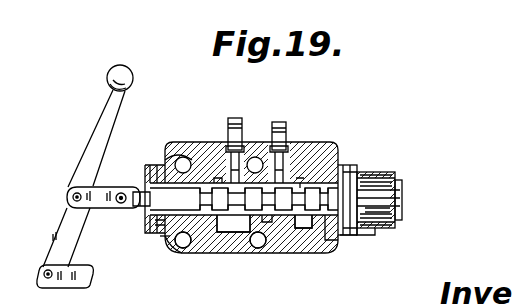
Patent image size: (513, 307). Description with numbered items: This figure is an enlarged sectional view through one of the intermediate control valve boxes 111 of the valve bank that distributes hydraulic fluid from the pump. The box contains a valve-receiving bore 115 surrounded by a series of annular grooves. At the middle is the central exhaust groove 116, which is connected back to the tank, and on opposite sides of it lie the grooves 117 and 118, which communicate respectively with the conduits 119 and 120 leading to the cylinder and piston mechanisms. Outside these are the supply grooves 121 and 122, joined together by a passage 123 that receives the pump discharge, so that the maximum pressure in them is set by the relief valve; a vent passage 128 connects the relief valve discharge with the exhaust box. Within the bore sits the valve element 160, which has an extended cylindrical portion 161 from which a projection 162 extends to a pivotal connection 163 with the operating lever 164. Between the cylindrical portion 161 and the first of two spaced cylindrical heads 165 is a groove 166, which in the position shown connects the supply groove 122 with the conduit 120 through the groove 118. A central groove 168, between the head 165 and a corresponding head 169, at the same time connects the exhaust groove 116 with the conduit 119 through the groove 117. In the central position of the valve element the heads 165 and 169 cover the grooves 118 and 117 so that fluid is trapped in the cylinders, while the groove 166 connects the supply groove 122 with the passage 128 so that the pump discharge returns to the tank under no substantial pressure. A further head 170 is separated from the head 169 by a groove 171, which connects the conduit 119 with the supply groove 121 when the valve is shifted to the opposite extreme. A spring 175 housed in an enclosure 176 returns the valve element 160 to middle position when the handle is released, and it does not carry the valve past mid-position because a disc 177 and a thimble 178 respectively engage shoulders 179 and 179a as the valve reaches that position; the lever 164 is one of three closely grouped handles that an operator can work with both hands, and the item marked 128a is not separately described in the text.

The control valve box 111 is at (340, 150).
The valve-receiving bore 115 is at (310, 181).
The central exhaust groove 116 is at (230, 224).
The annular groove 117 is at (264, 222).
The annular groove 118 is at (193, 252).
The conduit 119 is at (286, 123).
The conduit 120 is at (238, 120).
The annular supply groove 121 is at (300, 183).
The annular supply groove 122 is at (176, 190).
The passage 123 is at (298, 225).
The passage 128 is at (158, 226).
The pin 128a is at (168, 238).
The valve element 160 is at (378, 180).
The extended cylindrical portion 161 is at (160, 162).
The projection 162 is at (148, 188).
The pivotal connection 163 is at (121, 203).
The operating lever 164 is at (98, 152).
The cylindrical head 165 is at (175, 238).
The groove 166 is at (218, 187).
The central groove 168 is at (258, 230).
The cylindrical head 169 is at (312, 222).
The head 170 is at (372, 223).
The groove 171 is at (340, 176).
The spring 175 is at (383, 212).
The enclosure 176 is at (366, 177).
The disc 177 is at (355, 173).
The thimble 178 is at (380, 202).
The shoulder 179 is at (358, 224).
The shoulder 179a is at (382, 190).